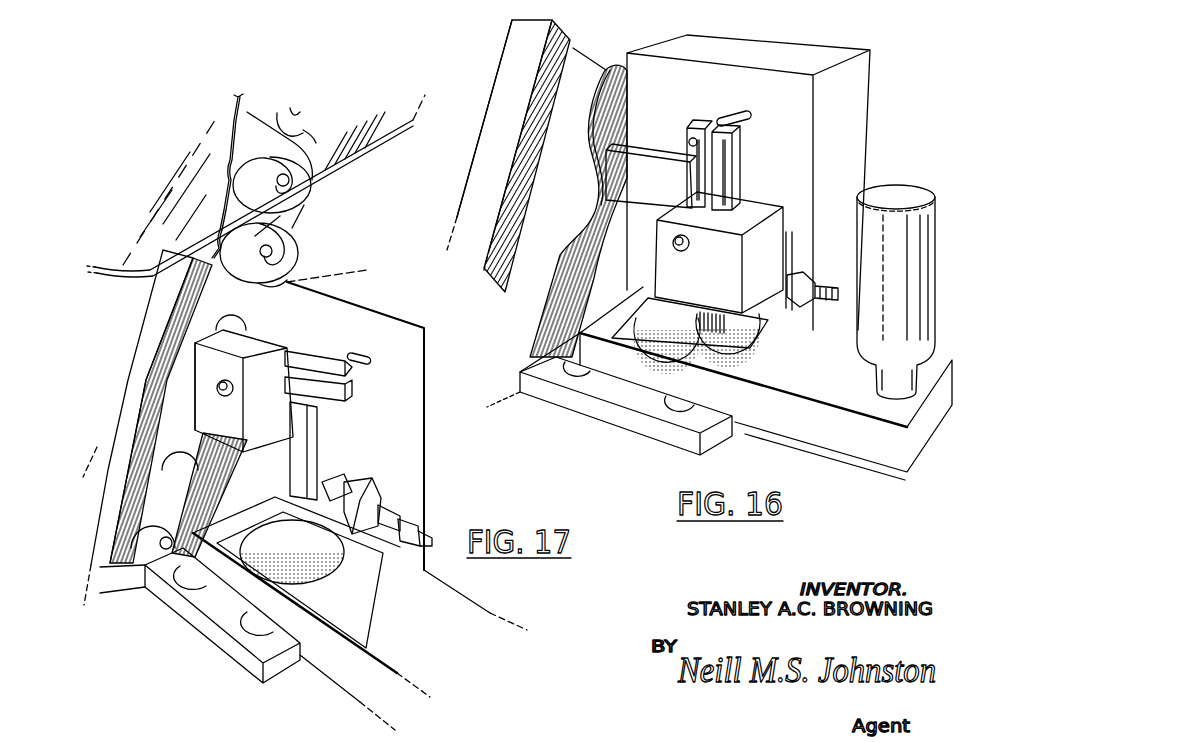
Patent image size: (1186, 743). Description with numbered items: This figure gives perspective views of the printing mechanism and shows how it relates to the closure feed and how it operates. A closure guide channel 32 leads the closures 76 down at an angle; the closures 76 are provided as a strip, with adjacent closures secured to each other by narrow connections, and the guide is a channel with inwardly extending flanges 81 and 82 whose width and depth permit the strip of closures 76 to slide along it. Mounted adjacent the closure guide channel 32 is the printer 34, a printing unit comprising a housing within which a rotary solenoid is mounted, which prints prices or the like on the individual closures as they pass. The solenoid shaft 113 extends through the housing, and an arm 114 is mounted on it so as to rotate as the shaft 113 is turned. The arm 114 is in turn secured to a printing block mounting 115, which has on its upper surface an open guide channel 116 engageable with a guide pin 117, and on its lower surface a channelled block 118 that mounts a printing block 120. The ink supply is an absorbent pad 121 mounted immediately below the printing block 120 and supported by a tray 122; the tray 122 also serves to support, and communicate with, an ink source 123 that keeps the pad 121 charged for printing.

In FIG. 16, the closure guide channel 32 is at (493, 71).
In FIG. 17, the closure guide channel 32 is at (151, 319).
In FIG. 16, the printer 34 is at (840, 117).
In FIG. 17, the printer 34 is at (378, 387).
In FIG. 17, the closures 76 is at (288, 243).
In FIG. 16, the inwardly extending flange 81 is at (490, 172).
In FIG. 16, the inwardly extending flange 82 is at (576, 238).
In FIG. 16, the solenoid shaft 113 is at (673, 193).
In FIG. 17, the solenoid shaft 113 is at (340, 420).
In FIG. 16, the arm 114 is at (612, 170).
In FIG. 17, the arm 114 is at (300, 468).
In FIG. 16, the printing block mounting 115 is at (757, 295).
In FIG. 17, the printing block mounting 115 is at (260, 338).
In FIG. 16, the open guide channel 116 is at (708, 165).
In FIG. 17, the open guide channel 116 is at (352, 385).
In FIG. 16, the guide pin 117 is at (740, 112).
In FIG. 17, the guide pin 117 is at (368, 350).
In FIG. 16, the channelled block 118 is at (713, 342).
In FIG. 17, the channelled block 118 is at (187, 365).
In FIG. 16, the printing block 120 is at (712, 344).
In FIG. 16, the absorbent pad 121 is at (660, 330).
In FIG. 17, the absorbent pad 121 is at (323, 555).
In FIG. 16, the tray 122 is at (787, 420).
In FIG. 17, the tray 122 is at (438, 600).
In FIG. 16, the ink source 123 is at (898, 193).